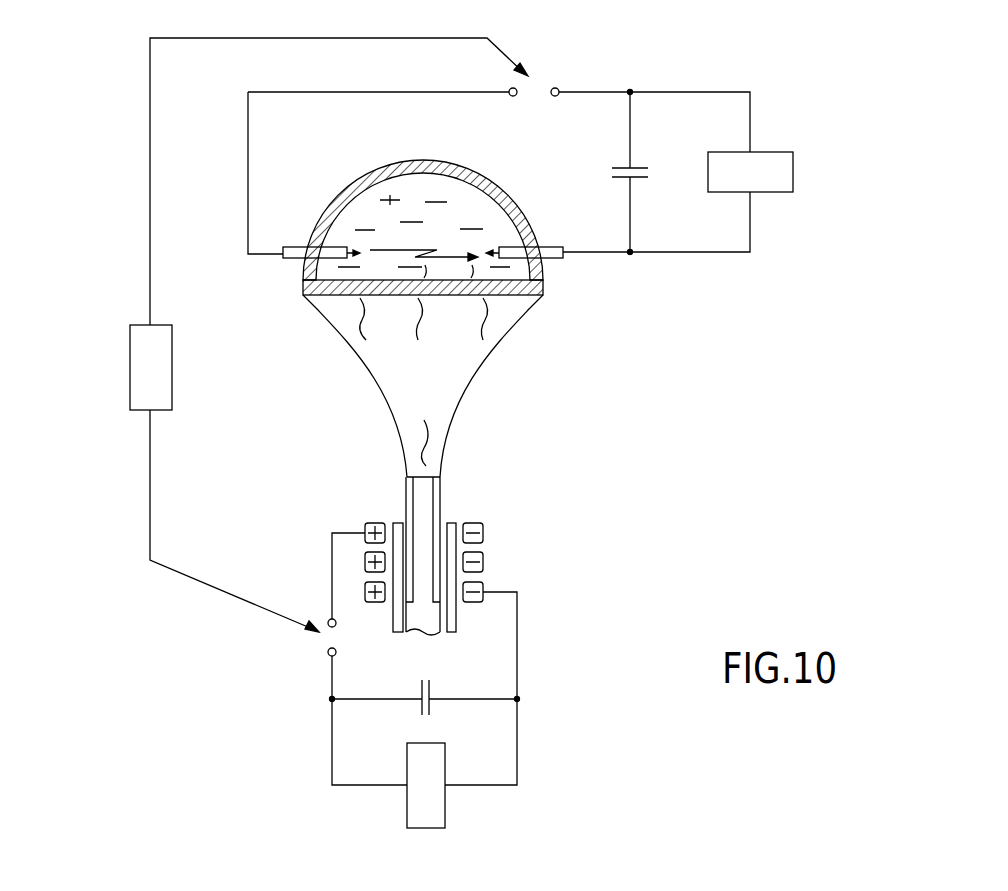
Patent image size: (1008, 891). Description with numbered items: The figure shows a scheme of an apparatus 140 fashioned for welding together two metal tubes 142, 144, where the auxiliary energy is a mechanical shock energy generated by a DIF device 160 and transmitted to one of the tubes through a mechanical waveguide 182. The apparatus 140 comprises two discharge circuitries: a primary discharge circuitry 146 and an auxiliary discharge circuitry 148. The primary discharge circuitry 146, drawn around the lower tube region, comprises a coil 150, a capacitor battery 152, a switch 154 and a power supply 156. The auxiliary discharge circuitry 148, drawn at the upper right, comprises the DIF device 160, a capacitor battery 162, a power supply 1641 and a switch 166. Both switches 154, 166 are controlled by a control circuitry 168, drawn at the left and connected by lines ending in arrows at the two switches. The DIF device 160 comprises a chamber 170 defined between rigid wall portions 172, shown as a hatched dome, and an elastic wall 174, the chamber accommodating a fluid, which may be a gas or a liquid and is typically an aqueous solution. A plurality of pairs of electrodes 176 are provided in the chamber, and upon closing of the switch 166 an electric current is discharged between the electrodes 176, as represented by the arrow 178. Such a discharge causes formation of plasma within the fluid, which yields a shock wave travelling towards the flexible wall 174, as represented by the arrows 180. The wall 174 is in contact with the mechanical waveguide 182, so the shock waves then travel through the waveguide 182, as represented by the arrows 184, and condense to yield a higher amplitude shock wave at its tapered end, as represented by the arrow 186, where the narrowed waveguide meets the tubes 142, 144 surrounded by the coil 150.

The apparatus 140 is at (668, 372).
The tube 142 is at (443, 492).
The tube 144 is at (457, 615).
The primary discharge circuitry 146 is at (498, 672).
The auxiliary discharge circuitry 148 is at (601, 228).
The coil 150 is at (487, 532).
The capacitor battery 152 is at (420, 712).
The switch 154 is at (328, 638).
The power supply 156 is at (445, 808).
The DIF device 160 is at (303, 281).
The capacitor battery 162 is at (637, 166).
The power supply 1641 is at (795, 158).
The switch 166 is at (540, 90).
The circuitry 168 is at (130, 380).
The chamber 170 is at (538, 298).
The rigid wall portions 172 is at (486, 172).
The elastic wall 174 is at (315, 303).
The electrodes 176 is at (283, 256).
The arrow 178 is at (392, 250).
The arrows 180 is at (372, 278).
The mechanical waveguide 182 is at (487, 330).
The arrows 184 is at (358, 302).
The arrow 186 is at (420, 438).